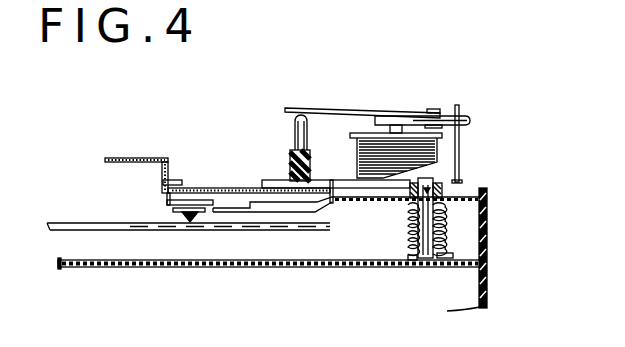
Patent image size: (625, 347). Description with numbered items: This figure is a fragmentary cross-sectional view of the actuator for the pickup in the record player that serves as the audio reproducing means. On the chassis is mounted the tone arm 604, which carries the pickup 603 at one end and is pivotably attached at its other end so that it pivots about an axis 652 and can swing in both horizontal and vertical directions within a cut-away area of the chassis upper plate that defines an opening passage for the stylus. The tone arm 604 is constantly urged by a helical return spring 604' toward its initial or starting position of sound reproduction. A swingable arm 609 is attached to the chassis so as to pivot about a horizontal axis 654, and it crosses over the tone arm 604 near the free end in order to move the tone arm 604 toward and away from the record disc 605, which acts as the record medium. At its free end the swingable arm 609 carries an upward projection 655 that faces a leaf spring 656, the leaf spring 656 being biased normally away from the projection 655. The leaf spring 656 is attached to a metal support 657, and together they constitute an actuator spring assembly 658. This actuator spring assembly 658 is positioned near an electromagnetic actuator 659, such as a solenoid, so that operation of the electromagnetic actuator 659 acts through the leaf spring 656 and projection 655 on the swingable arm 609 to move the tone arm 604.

The tone arm 604 is at (292, 162).
The helical return spring 604' is at (312, 249).
The record disc 605 is at (128, 224).
The pickup 603 is at (190, 222).
The swingable arm 609 is at (287, 150).
The upward projection 655 is at (298, 114).
The leaf spring 656 is at (354, 140).
The metal support 657 is at (465, 116).
The actuator spring assembly 658 is at (410, 111).
The electromagnetic actuator 659 is at (438, 145).
The horizontal axis 654 is at (432, 181).
The axis 652 is at (443, 193).